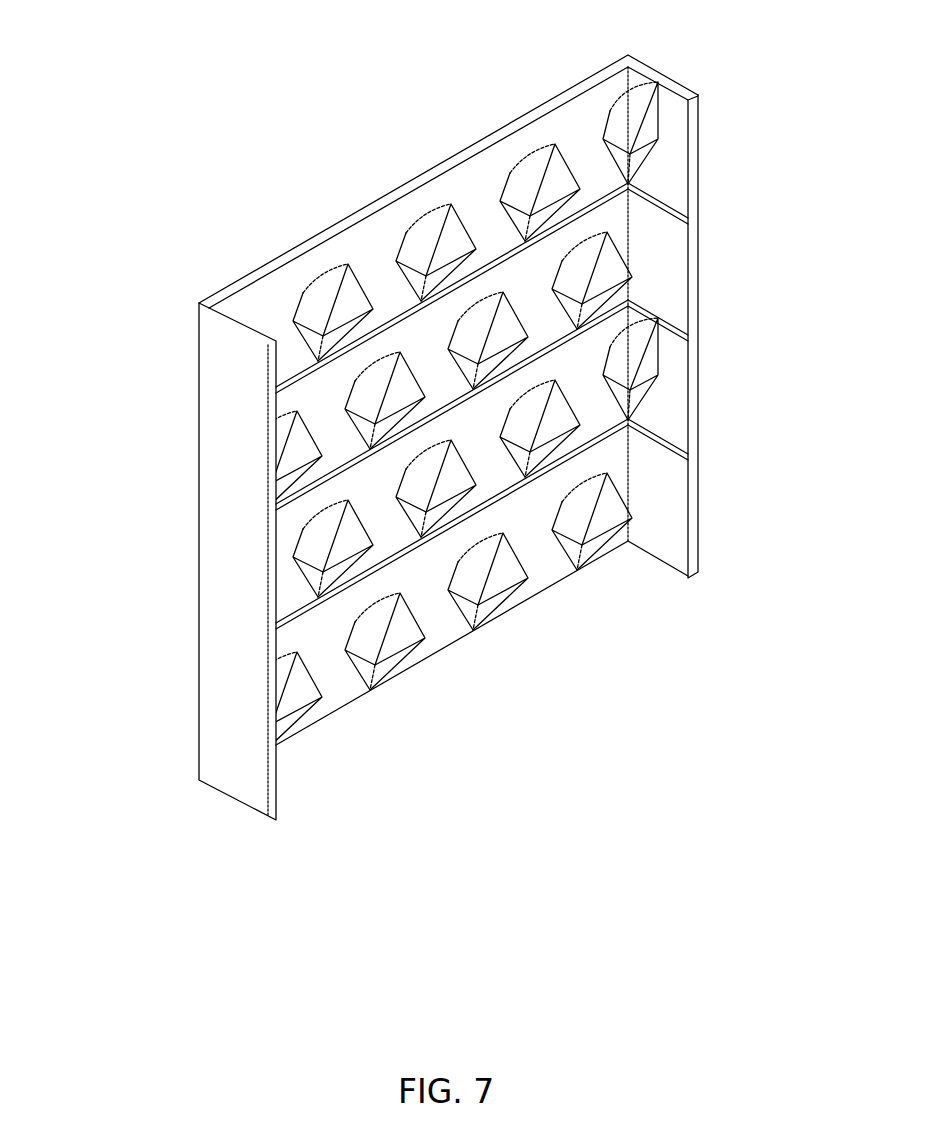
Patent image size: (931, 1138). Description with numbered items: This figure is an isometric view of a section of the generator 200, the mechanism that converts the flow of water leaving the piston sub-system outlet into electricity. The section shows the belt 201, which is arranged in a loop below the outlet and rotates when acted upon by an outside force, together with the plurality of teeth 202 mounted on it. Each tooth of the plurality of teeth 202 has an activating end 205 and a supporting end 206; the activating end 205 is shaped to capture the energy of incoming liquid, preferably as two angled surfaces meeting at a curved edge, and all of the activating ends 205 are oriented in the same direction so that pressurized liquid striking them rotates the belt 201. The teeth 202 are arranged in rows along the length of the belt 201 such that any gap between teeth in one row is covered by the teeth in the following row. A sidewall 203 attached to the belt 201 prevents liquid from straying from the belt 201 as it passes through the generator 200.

The generator 200 is at (276, 77).
The belt 201 is at (475, 177).
The plurality of teeth 202 is at (362, 415).
The sidewall 203 is at (665, 247).
The activating end 205 is at (313, 307).
The supporting end 206 is at (485, 608).